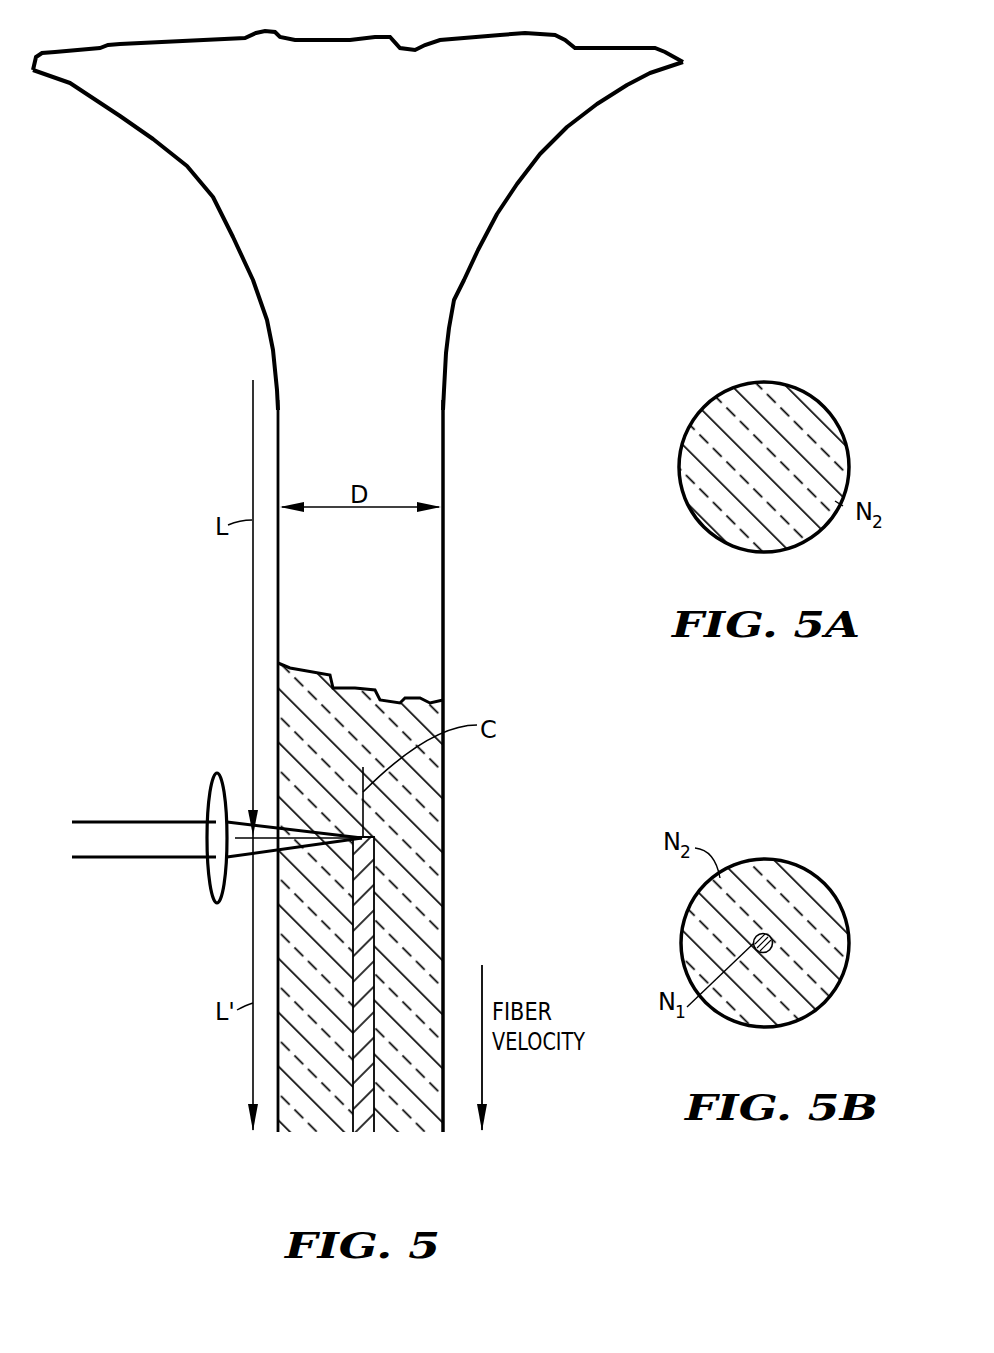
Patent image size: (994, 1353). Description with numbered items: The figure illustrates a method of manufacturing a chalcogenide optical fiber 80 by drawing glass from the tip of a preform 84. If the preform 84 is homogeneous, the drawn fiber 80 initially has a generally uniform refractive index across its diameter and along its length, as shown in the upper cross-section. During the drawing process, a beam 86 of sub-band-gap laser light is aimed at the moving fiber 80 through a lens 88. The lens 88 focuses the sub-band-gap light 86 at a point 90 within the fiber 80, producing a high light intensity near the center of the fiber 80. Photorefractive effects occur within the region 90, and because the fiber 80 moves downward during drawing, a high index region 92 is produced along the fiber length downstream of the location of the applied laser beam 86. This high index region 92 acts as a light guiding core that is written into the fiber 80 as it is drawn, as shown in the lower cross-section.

The chalcogenide optical fiber 80 is at (268, 322).
The preform 84 is at (172, 138).
The beam of sub-band-gap laser light 86 is at (152, 826).
The lens 88 is at (213, 868).
The focal point region 90 is at (380, 847).
The high index region 92 is at (380, 933).